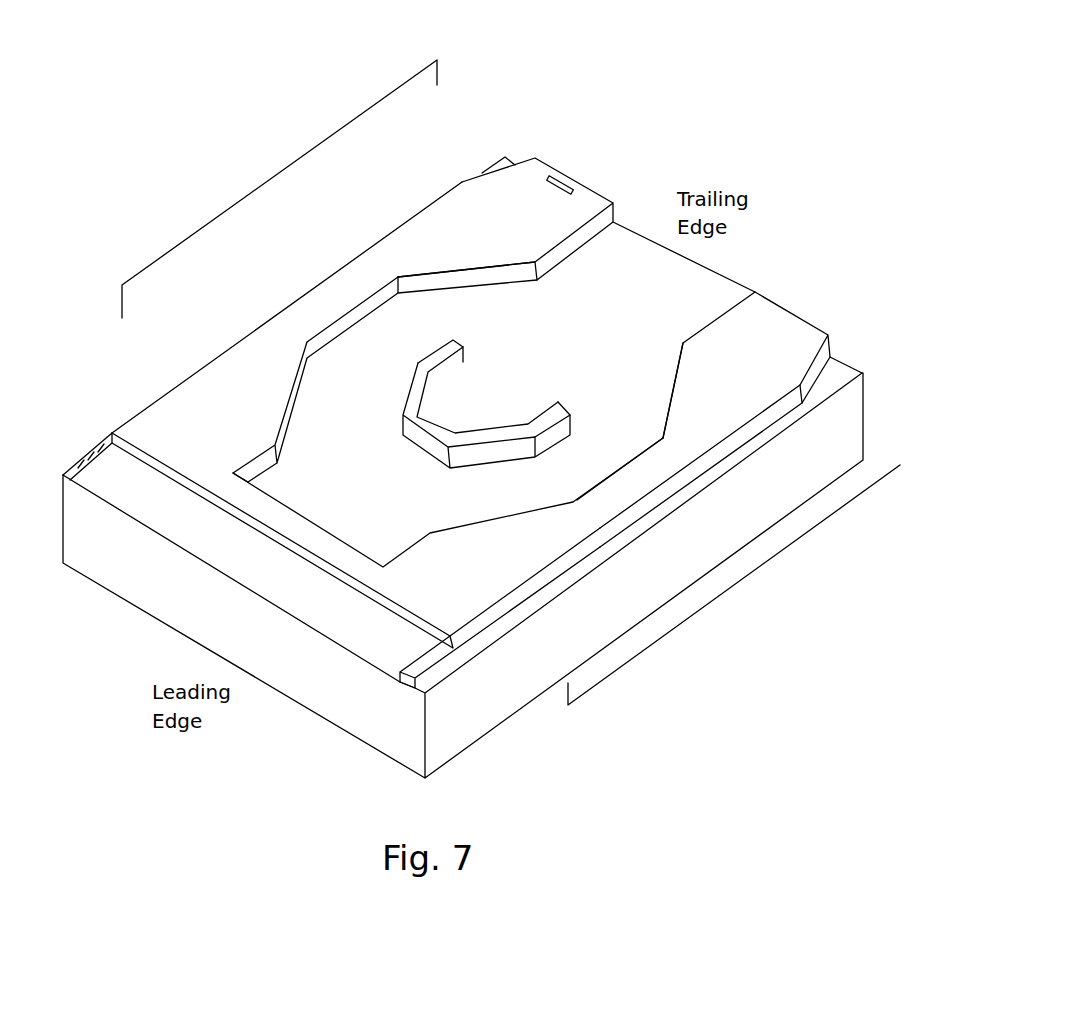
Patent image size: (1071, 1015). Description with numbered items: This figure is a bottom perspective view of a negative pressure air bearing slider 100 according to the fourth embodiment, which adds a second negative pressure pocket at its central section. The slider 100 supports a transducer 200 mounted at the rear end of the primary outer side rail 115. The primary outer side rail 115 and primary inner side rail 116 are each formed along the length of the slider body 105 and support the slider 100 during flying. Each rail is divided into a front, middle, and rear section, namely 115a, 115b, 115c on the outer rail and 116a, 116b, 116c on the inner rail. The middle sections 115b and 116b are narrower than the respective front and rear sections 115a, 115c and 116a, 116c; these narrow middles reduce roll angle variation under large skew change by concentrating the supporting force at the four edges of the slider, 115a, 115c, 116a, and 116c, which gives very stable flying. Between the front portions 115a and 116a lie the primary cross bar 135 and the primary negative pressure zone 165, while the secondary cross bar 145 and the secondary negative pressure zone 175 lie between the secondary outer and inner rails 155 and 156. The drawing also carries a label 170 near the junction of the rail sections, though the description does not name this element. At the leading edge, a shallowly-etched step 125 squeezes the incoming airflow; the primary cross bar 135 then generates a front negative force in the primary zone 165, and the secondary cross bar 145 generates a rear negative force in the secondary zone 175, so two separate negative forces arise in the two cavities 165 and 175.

The slider 100 is at (762, 110).
The slider body 105 is at (873, 410).
The primary outer side rail 115 is at (287, 246).
The front section of outer side rail 115a is at (183, 443).
The middle section of outer side rail 115b is at (313, 313).
The rear section of outer side rail 115c is at (465, 213).
The primary inner side rail 116 is at (734, 585).
The front section of inner side rail 116a is at (440, 582).
The middle section of inner side rail 116b is at (613, 492).
The rear section of inner side rail 116c is at (733, 385).
The shallowly-etched step 125 is at (265, 560).
The primary cross bar 135 is at (277, 515).
The secondary cross bar 145 is at (437, 433).
The secondary outer rail 155 is at (450, 338).
The secondary inner rail 156 is at (566, 403).
The primary negative pressure zone 165 is at (320, 487).
The step 170 is at (417, 333).
The secondary negative pressure zone 175 is at (467, 407).
The transducer 200 is at (563, 177).